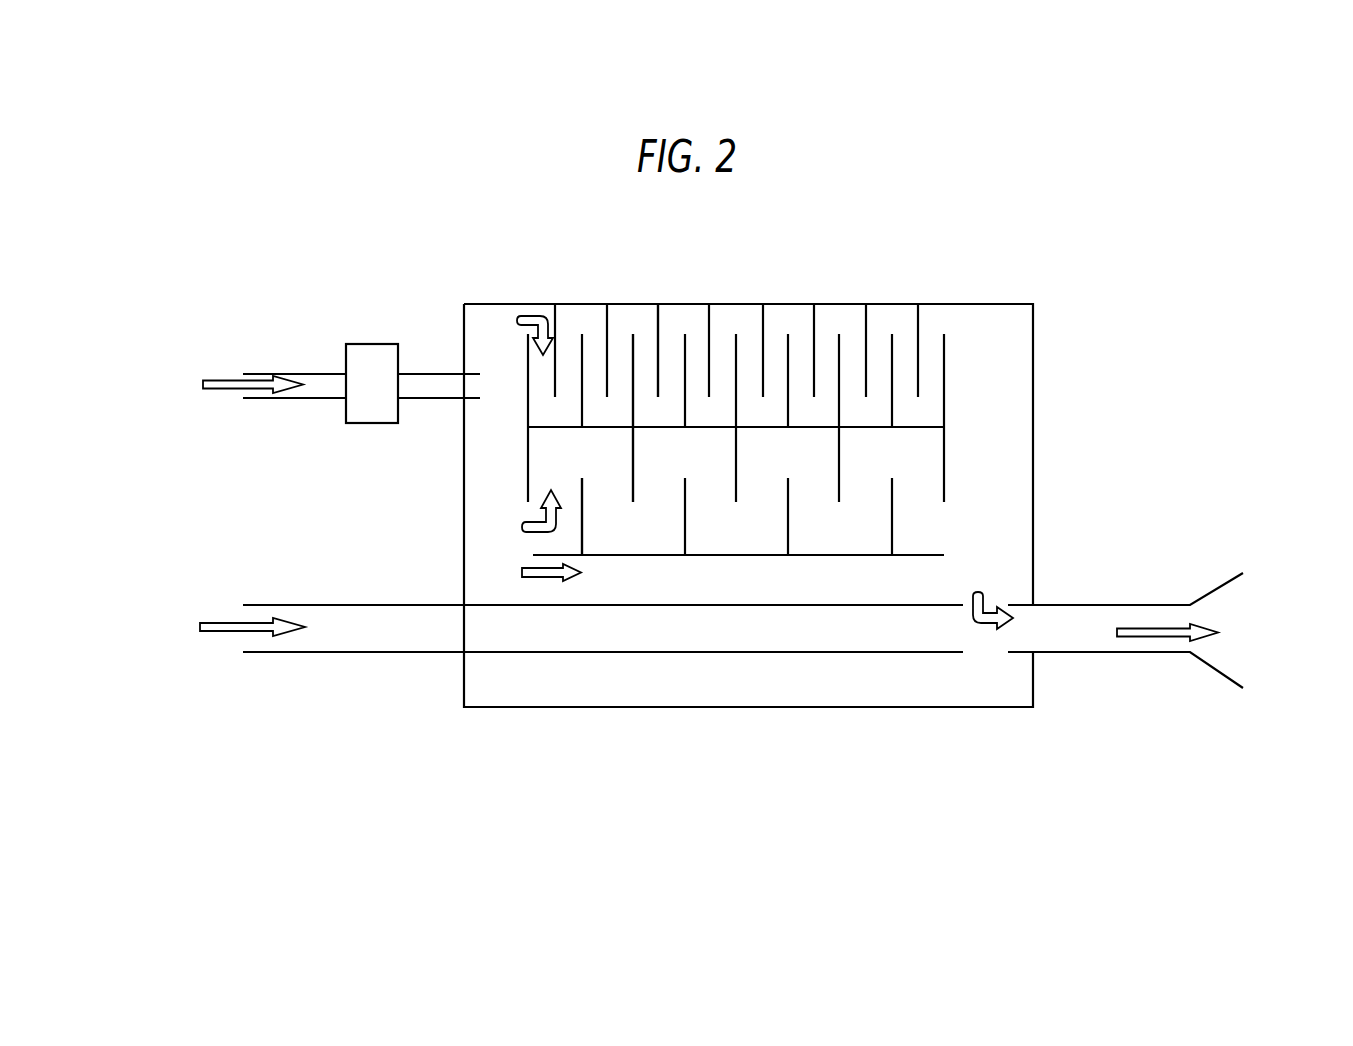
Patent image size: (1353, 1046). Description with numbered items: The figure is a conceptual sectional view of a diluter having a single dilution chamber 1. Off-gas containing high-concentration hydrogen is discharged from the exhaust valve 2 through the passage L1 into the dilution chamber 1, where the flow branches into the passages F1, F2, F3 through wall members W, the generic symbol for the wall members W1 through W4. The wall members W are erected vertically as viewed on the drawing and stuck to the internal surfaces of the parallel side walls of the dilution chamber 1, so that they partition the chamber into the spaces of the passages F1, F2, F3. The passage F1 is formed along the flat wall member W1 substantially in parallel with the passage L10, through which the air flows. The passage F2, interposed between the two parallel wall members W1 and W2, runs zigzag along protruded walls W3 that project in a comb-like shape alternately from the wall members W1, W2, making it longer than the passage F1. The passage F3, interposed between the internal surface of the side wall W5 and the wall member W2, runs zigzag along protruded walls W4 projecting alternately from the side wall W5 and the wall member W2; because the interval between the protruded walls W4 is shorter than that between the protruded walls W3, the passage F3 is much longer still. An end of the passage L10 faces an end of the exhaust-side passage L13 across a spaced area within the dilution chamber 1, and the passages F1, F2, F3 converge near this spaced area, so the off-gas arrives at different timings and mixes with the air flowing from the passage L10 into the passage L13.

The dilution chamber 1 is at (1033, 377).
The exhaust valve 2 is at (400, 357).
The passage L1 is at (317, 398).
The passage L10 is at (315, 652).
The passage L13 is at (1138, 653).
The wall members W is at (948, 328).
The flat wall member W1 is at (717, 555).
The wall member W2 is at (662, 430).
The protruded walls W3 is at (632, 453).
The protruded walls W4 is at (634, 350).
The side wall W5 is at (782, 305).
The passage F1 is at (502, 585).
The passage F2 is at (517, 520).
The passage F3 is at (543, 308).